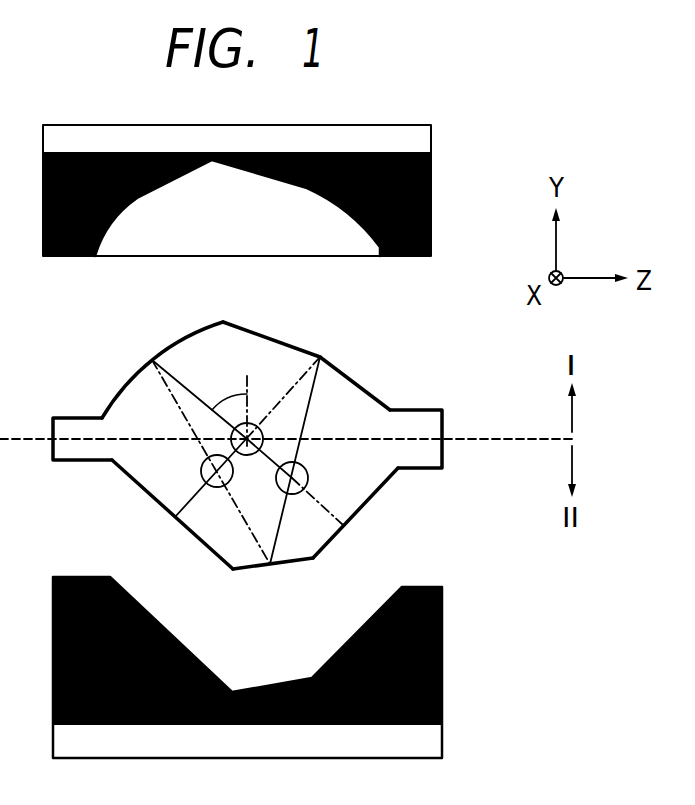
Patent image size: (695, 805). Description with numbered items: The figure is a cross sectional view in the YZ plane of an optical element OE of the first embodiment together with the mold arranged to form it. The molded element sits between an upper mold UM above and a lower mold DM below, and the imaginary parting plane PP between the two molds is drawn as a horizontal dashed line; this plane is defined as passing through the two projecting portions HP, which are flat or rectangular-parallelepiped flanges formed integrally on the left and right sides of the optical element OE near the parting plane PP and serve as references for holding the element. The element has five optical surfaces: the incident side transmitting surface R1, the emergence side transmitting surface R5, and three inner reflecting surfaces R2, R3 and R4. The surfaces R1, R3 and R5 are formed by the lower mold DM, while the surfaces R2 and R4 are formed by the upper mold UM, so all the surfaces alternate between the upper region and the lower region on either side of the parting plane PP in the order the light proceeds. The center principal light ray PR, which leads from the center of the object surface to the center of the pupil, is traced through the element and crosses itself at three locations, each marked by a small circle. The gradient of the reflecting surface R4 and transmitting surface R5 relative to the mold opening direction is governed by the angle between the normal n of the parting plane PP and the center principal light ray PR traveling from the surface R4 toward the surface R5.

The upper mold UM is at (237, 190).
The lower mold DM is at (247, 667).
The projecting portions HP is at (80, 418).
The optical element OE is at (326, 342).
The center principal light ray PR is at (312, 398).
The parting plane PP is at (323, 441).
The incident side refractive surface R1 is at (172, 514).
The reflecting surface R2 is at (271, 327).
The reflecting surface R3 is at (273, 581).
The reflecting surface R4 is at (162, 370).
The emergence side refractive surface R5 is at (355, 513).
The normal of the parting plane n is at (247, 397).